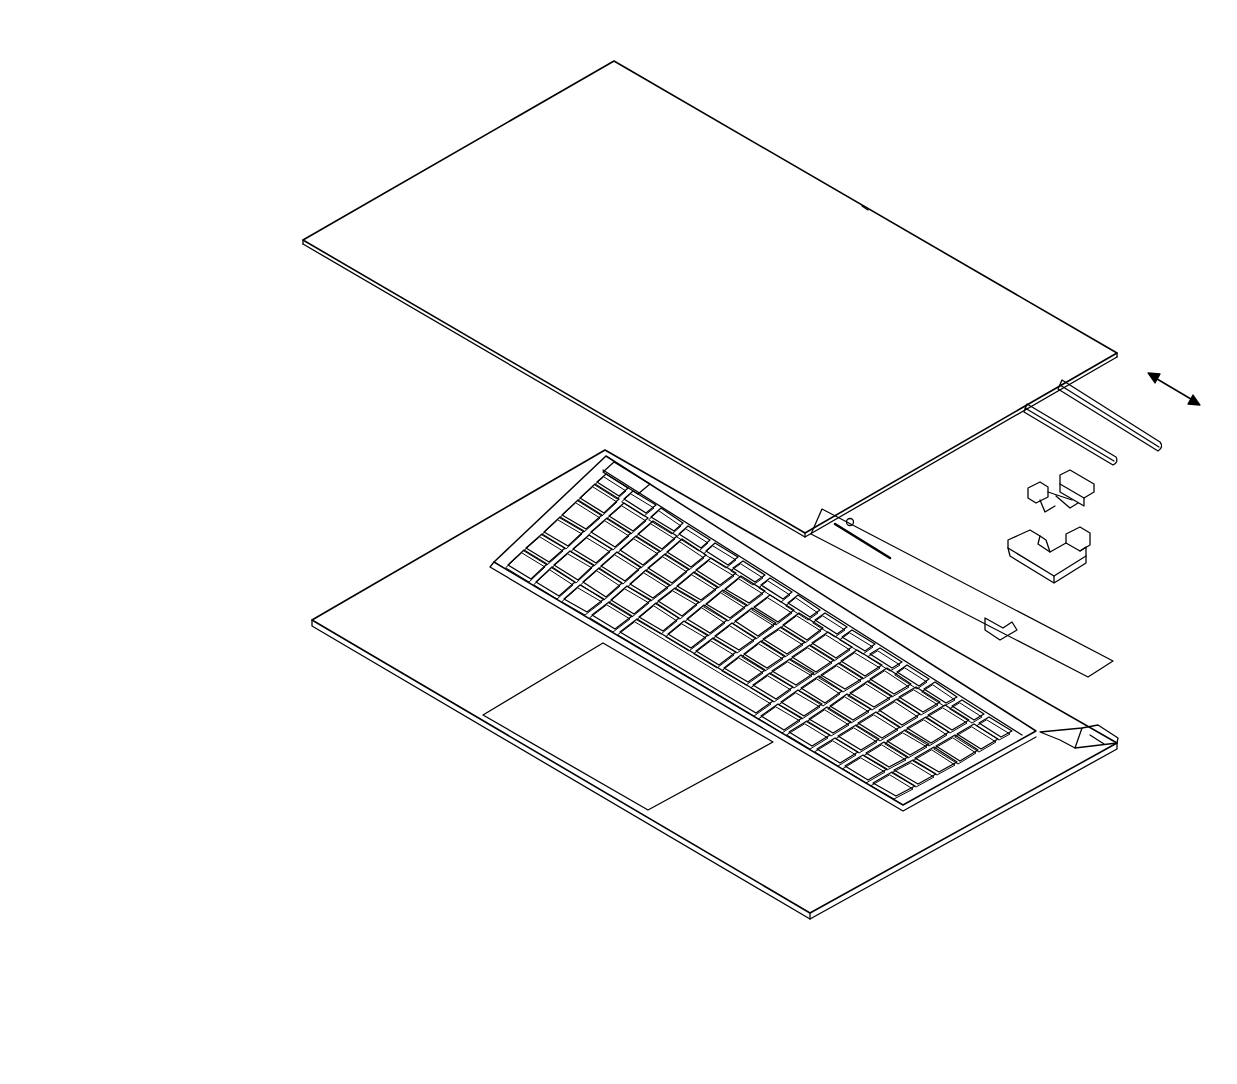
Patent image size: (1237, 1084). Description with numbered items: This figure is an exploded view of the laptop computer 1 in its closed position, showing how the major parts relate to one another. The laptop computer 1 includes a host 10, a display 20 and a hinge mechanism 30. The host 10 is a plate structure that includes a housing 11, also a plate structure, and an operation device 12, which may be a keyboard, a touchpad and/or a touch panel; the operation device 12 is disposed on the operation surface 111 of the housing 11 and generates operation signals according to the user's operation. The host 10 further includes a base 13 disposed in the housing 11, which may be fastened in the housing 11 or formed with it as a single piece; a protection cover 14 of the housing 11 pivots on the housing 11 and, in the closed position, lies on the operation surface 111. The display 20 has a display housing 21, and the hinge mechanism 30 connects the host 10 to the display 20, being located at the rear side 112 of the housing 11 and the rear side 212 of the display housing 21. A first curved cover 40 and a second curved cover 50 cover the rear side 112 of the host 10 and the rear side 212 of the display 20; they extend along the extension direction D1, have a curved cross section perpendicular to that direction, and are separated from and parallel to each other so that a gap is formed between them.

The laptop computer 1 is at (188, 72).
The display 20 is at (356, 128).
The display housing 21 is at (482, 122).
The rear side of the display housing 212 is at (862, 208).
The host 10 is at (408, 476).
The housing 11 is at (432, 543).
The operation surface 111 is at (357, 607).
The rear side of the housing 112 is at (1120, 742).
The operation device 12 is at (550, 592).
The base 13 is at (1104, 562).
The protection cover 14 is at (1048, 632).
The hinge mechanism 30 is at (1098, 510).
The first curved cover 40 is at (1165, 448).
The second curved cover 50 is at (1120, 462).
The extension direction D1 is at (1182, 382).